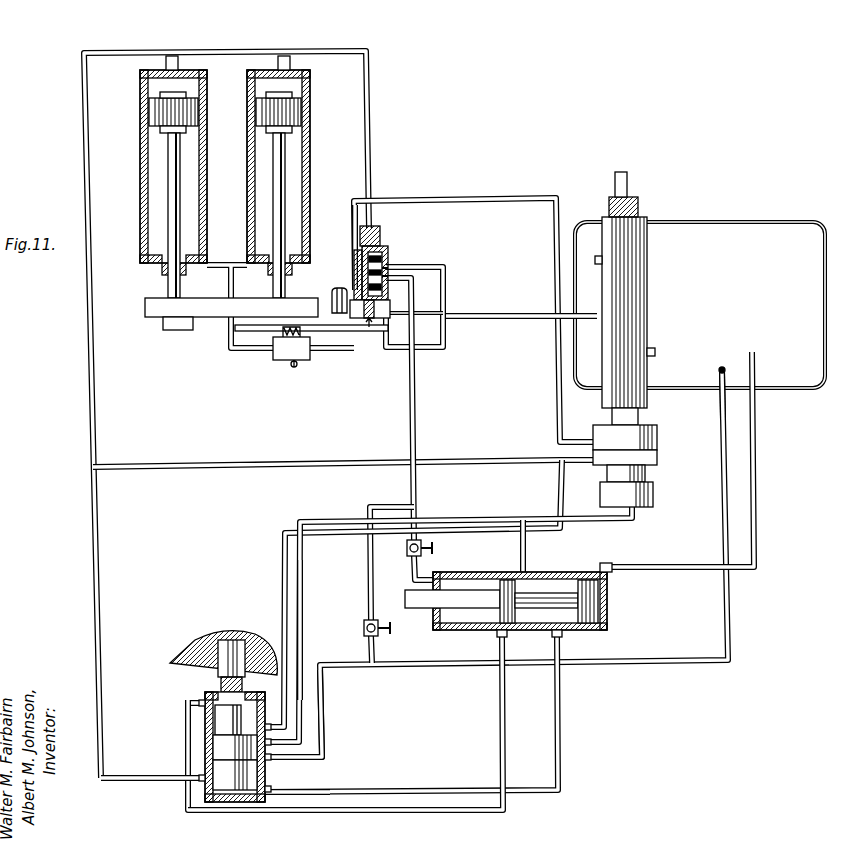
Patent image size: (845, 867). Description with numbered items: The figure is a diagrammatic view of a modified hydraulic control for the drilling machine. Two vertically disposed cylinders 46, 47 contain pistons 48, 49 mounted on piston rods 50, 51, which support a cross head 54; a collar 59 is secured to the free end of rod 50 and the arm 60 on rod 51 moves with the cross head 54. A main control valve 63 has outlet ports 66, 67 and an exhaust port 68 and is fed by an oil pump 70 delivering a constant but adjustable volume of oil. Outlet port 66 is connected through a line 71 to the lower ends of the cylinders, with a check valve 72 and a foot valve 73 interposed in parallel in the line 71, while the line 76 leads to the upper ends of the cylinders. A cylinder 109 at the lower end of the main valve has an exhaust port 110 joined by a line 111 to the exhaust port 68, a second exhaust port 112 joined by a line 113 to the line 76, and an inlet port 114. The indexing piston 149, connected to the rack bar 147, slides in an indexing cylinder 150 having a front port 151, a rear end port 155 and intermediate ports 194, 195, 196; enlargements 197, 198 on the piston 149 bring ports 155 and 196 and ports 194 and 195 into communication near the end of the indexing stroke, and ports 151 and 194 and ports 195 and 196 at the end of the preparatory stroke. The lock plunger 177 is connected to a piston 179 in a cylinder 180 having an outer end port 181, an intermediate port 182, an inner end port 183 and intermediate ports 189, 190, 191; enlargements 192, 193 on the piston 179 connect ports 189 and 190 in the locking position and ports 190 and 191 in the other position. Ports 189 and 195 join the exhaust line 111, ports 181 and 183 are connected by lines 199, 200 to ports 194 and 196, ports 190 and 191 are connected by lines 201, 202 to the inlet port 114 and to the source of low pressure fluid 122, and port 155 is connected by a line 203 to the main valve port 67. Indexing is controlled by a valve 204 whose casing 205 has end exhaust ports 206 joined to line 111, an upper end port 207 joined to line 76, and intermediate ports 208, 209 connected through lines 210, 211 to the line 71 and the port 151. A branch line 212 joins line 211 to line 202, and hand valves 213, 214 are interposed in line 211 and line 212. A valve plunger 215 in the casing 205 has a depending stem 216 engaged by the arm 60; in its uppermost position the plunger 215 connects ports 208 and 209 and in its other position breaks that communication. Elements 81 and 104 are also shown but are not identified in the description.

The cylinder 46 is at (146, 182).
The cylinder 47 is at (310, 156).
The piston 48 is at (153, 116).
The piston 49 is at (302, 108).
The piston rod 50 is at (170, 222).
The piston rod 51 is at (284, 190).
The cross head 54 is at (205, 314).
The collar 59 is at (170, 331).
The arm 60 is at (272, 326).
The main control valve 63 is at (655, 301).
The outlet port 66 is at (596, 316).
The outlet port 67 is at (653, 350).
The exhaust port 68 is at (596, 256).
The oil pump 70 is at (742, 228).
The line 71 is at (229, 336).
The check valve 72 is at (295, 368).
The foot valve 73 is at (285, 361).
The line 76 is at (369, 102).
The piston rod 81 is at (627, 185).
The bracket 104 is at (339, 316).
The cylinder 109 is at (645, 472).
The exhaust port 110 is at (657, 437).
The line 111 is at (556, 390).
The exhaust port 112 is at (657, 458).
The line 113 is at (288, 466).
The inlet port 114 is at (630, 510).
The source of low pressure fluid 122 is at (718, 370).
The rack bar 147 is at (406, 596).
The indexing piston 149 is at (560, 592).
The indexing cylinder 150 is at (440, 630).
The port 151 is at (407, 550).
The end port 155 is at (609, 566).
The lock plunger 177 is at (195, 658).
The piston 179 is at (192, 812).
The cylinder 180 is at (205, 735).
The outer end port 181 is at (266, 790).
The intermediate port 182 is at (203, 780).
The inner end port 183 is at (205, 700).
The intermediate port 189 is at (265, 727).
The intermediate port 190 is at (268, 743).
The intermediate port 191 is at (270, 758).
The enlargement 192 is at (207, 728).
The enlargement 193 is at (215, 762).
The intermediate port 194 is at (505, 623).
The intermediate port 195 is at (525, 572).
The intermediate port 196 is at (561, 637).
The enlargement 197 is at (504, 637).
The enlargement 198 is at (600, 604).
The line 199 is at (412, 791).
The line 200 is at (462, 809).
The line 201 is at (302, 600).
The line 202 is at (362, 668).
The line 203 is at (757, 450).
The valve 204 is at (370, 329).
The casing 205 is at (355, 270).
The end exhaust port 206 is at (354, 262).
The upper end port 207 is at (379, 231).
The intermediate port 208 is at (387, 262).
The intermediate port 209 is at (388, 276).
The line 210 is at (444, 296).
The line 211 is at (414, 398).
The branch line 212 is at (369, 575).
The hand valve 213 is at (434, 548).
The hand valve 214 is at (364, 628).
The valve plunger 215 is at (388, 268).
The depending stem 216 is at (392, 314).